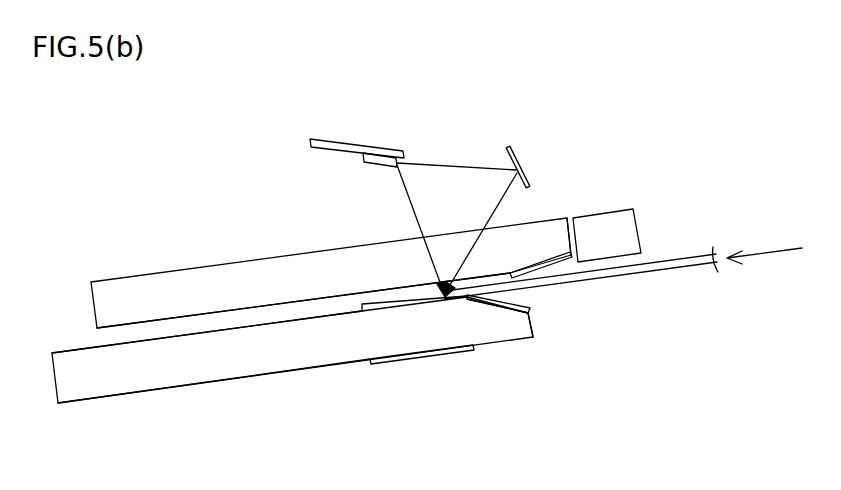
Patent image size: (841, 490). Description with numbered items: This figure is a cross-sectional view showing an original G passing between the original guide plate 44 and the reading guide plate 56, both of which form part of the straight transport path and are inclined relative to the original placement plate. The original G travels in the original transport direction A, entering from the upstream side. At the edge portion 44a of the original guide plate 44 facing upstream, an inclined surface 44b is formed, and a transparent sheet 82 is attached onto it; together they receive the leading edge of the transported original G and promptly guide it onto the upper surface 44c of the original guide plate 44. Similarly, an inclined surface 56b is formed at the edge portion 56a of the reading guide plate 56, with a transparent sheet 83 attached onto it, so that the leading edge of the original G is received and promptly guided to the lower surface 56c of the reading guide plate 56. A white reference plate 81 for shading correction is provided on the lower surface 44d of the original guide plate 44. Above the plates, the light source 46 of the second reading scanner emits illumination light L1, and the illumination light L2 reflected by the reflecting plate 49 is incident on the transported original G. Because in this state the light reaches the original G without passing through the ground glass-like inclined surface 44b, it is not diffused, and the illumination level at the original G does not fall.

The original guide plate 44 is at (265, 353).
The edge portion of the original guide plate 44a is at (534, 338).
The inclined surface 44b is at (502, 311).
The upper surface of the original guide plate 44c is at (196, 333).
The lower surface of the original guide plate 44d is at (343, 364).
The light source 46 is at (378, 157).
The reflecting plate 49 is at (519, 155).
The reading guide plate 56 is at (161, 274).
The edge portion of the reading guide plate 56a is at (567, 218).
The inclined surface 56b is at (596, 258).
The lower surface of the reading guide plate 56c is at (263, 309).
The white reference plate 81 is at (421, 364).
The transparent sheet 82 is at (522, 299).
The transparent sheet 83 is at (583, 262).
The original G is at (680, 270).
The original transport direction A is at (779, 247).
The illumination light L1 is at (407, 202).
The illumination light L2 is at (500, 197).